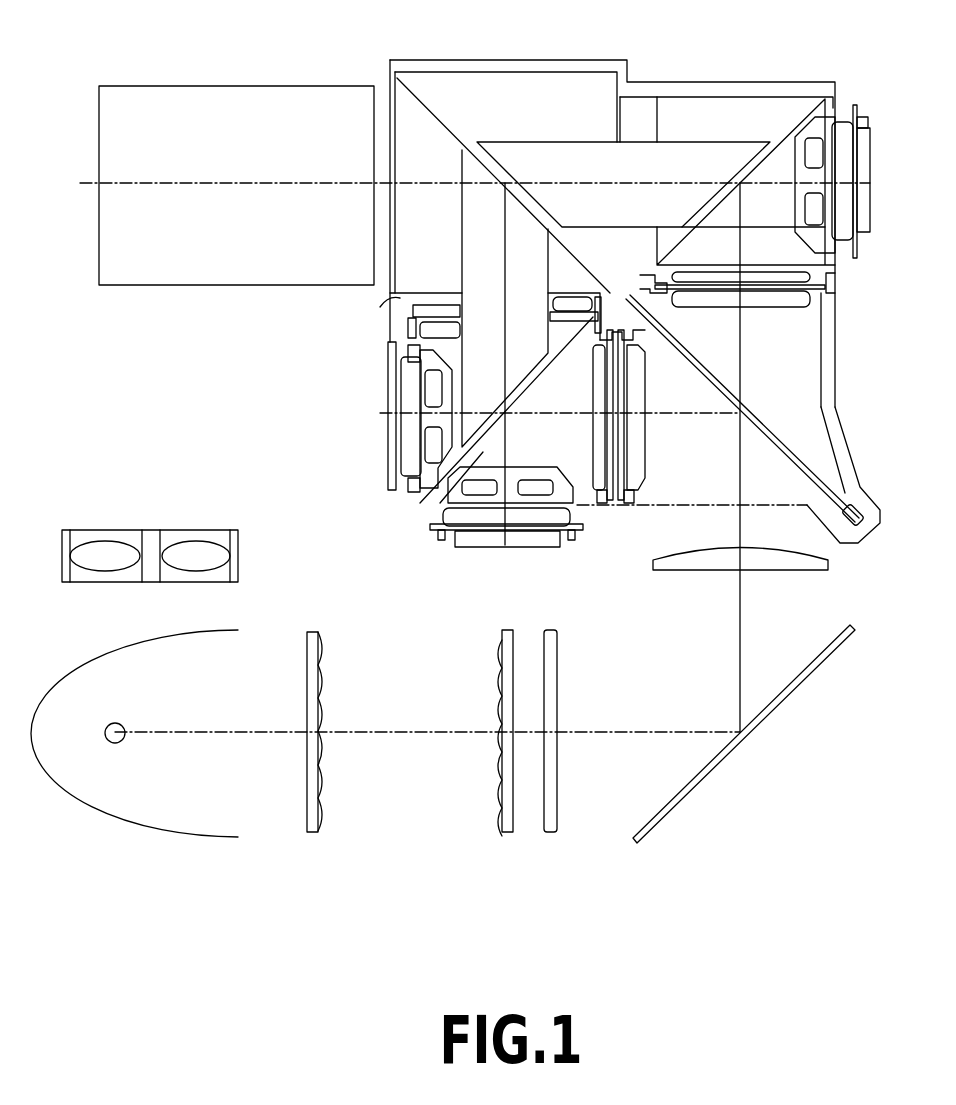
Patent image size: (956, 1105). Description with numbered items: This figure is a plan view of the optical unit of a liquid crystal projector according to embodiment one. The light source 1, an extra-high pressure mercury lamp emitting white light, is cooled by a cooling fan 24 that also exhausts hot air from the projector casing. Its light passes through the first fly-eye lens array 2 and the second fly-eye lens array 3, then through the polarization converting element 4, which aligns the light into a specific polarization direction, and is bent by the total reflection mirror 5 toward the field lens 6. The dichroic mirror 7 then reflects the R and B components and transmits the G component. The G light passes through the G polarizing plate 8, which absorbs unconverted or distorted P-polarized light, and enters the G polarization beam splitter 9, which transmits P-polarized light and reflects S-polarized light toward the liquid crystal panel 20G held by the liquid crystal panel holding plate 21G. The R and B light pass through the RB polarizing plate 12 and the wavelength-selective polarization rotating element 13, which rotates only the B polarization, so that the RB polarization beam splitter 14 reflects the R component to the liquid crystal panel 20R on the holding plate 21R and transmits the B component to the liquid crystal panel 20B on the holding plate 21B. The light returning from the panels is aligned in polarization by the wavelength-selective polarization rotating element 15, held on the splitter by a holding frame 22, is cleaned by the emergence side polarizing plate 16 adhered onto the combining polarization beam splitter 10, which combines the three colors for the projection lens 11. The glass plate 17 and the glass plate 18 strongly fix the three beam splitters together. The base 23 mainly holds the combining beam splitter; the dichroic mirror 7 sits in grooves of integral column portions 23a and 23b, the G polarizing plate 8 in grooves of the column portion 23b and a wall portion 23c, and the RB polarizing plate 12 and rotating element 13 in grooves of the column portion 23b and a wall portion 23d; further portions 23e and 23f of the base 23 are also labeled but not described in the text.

The light source 1 is at (130, 822).
The first fly-eye lens array 2 is at (313, 835).
The second fly-eye lens array 3 is at (507, 835).
The polarization converting element 4 is at (552, 835).
The total reflection mirror 5 is at (822, 660).
The field lens 6 is at (787, 563).
The dichroic mirror 7 is at (810, 467).
The G polarizing plate 8 is at (820, 308).
The G polarization beam splitter 9 is at (755, 112).
The combining polarization beam splitter 10 is at (497, 93).
The projection lens 11 is at (192, 100).
The RB polarizing plate 12 is at (637, 507).
The wavelength-selective polarization rotating element 13 is at (593, 507).
The RB polarization beam splitter 14 is at (420, 503).
The wavelength-selective polarization rotating element 15 is at (400, 299).
The emergence side polarizing plate 16 is at (395, 267).
The glass plate G 17 is at (677, 152).
The glass plate RB 18 is at (463, 147).
The liquid crystal panel 20B is at (392, 415).
The liquid crystal panel 20G is at (867, 150).
The liquid crystal panel 20R is at (507, 537).
The liquid crystal panel holding plate 21B is at (408, 470).
The liquid crystal panel holding plate 21G is at (827, 193).
The liquid crystal panel holding plate 21R is at (448, 503).
The holding frame 22 is at (405, 325).
The base 23 is at (810, 447).
The column portion 23a is at (870, 527).
The column portion 23b is at (673, 347).
The wall portion 23c is at (833, 295).
The wall portion 23d is at (613, 507).
The holder step portion 23e is at (768, 298).
The housing inner wall 23f is at (443, 303).
The cooling fan 24 is at (148, 528).